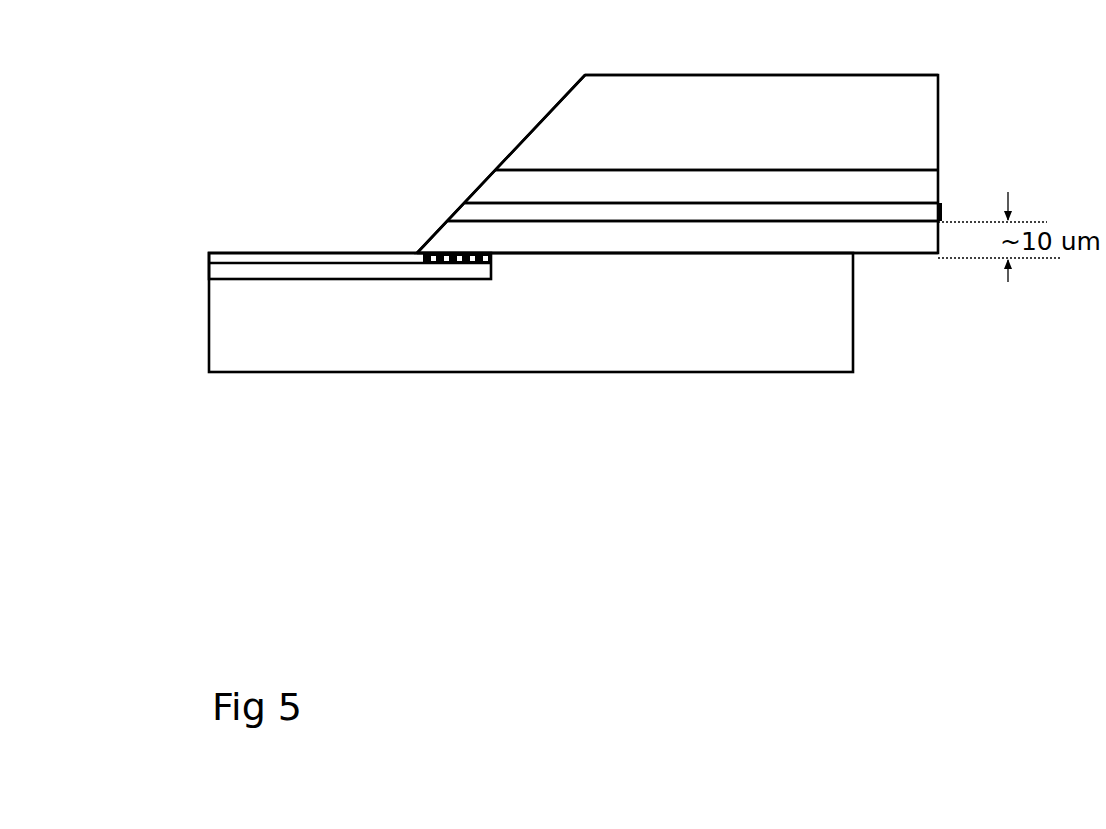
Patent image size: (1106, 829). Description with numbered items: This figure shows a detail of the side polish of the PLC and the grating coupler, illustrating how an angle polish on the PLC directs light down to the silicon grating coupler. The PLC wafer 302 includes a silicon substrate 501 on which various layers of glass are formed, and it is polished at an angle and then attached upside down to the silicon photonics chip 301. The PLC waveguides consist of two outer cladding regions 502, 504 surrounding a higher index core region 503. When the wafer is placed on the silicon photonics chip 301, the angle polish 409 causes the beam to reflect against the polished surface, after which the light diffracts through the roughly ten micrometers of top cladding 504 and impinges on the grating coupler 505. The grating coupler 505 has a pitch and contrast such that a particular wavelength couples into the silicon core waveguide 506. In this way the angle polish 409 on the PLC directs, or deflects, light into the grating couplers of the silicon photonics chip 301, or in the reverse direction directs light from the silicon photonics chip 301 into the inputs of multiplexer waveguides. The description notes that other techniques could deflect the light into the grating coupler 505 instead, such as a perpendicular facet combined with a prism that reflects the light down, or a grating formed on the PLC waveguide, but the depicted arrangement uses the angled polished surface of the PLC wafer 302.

The PLC wafer 302 is at (963, 257).
The silicon substrate 501 is at (716, 122).
The outer cladding region 502 is at (701, 189).
The core region 503 is at (695, 213).
The top cladding 504 is at (677, 237).
The angle polish 409 is at (538, 123).
The silicon photonics chip 301 is at (531, 312).
The silicon core waveguide 506 is at (312, 270).
The grating coupler 505 is at (461, 253).